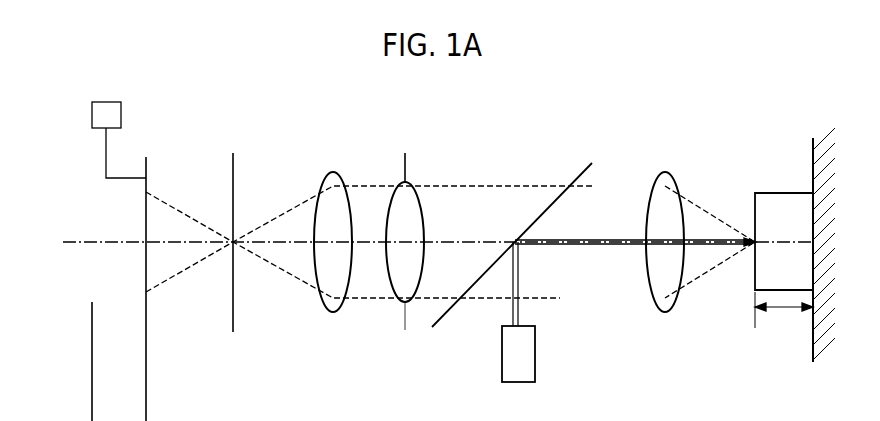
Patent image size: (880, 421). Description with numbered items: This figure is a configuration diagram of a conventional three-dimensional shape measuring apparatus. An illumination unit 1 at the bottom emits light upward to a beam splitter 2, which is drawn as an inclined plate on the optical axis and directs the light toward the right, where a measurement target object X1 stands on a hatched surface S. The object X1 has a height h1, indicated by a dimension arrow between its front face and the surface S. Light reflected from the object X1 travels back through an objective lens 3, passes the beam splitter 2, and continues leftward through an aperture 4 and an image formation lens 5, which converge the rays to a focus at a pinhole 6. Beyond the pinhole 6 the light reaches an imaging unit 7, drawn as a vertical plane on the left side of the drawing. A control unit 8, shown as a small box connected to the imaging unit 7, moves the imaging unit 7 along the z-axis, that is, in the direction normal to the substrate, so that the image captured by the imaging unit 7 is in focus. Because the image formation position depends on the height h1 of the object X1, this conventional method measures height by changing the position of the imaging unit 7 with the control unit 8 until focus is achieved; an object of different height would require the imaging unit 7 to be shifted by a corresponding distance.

The illumination unit 1 is at (535, 354).
The beam splitter 2 is at (575, 177).
The objective lens 3 is at (672, 180).
The aperture 4 is at (419, 196).
The image formation lens 5 is at (328, 182).
The pinhole 6 is at (233, 165).
The imaging unit 7 is at (146, 168).
The control unit 8 is at (105, 102).
The measurement object X1 is at (767, 192).
The surface S is at (831, 245).
The height h1 is at (784, 315).